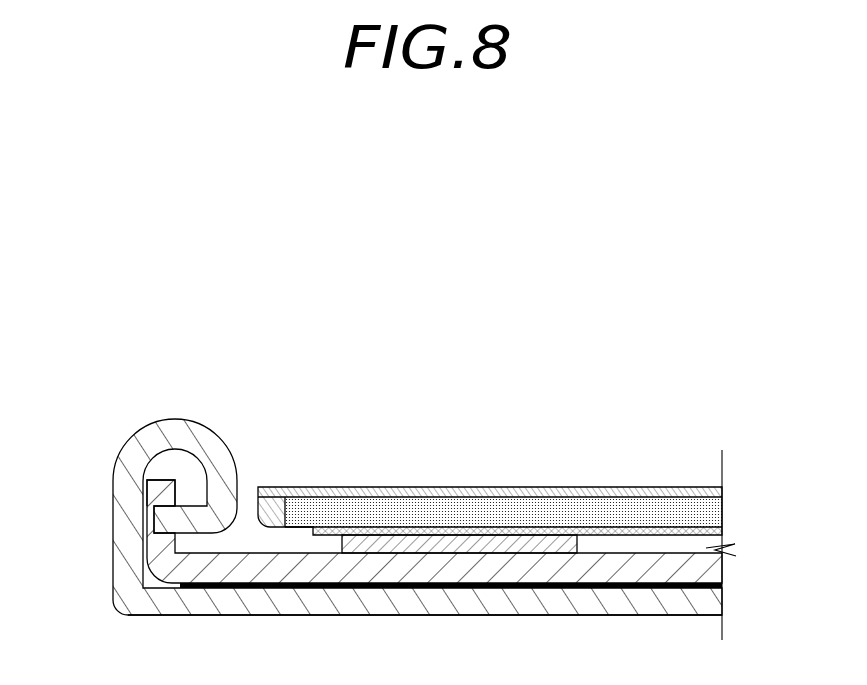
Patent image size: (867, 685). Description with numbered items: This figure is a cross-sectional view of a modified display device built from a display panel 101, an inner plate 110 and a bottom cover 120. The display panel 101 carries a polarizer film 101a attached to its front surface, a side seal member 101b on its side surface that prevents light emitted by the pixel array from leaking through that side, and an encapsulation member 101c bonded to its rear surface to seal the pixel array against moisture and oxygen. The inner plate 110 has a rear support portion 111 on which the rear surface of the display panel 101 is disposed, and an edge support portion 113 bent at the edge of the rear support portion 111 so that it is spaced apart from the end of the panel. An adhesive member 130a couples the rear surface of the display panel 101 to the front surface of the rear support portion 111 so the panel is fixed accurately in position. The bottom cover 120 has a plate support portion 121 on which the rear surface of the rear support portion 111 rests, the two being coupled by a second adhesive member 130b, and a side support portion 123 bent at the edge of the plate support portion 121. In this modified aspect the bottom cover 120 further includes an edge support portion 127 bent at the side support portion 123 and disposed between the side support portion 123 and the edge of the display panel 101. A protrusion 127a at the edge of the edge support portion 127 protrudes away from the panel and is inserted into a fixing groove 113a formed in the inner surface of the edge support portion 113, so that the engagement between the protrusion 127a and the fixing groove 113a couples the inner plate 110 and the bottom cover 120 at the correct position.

The display panel 101 is at (487, 482).
The polarizer film 101a is at (495, 489).
The side seal member 101b is at (272, 506).
The encapsulation member 101c is at (632, 523).
The inner plate 110 is at (725, 568).
The rear support portion 111 is at (517, 568).
The edge support portion 113 is at (143, 552).
The fixing groove 113a is at (158, 522).
The bottom cover 120 is at (725, 602).
The plate support portion 121 is at (335, 603).
The side support portion 123 is at (158, 544).
The edge support portion 127 is at (228, 484).
The protrusion 127a is at (190, 516).
The adhesive member 130a is at (440, 543).
The adhesive member 130b is at (615, 590).